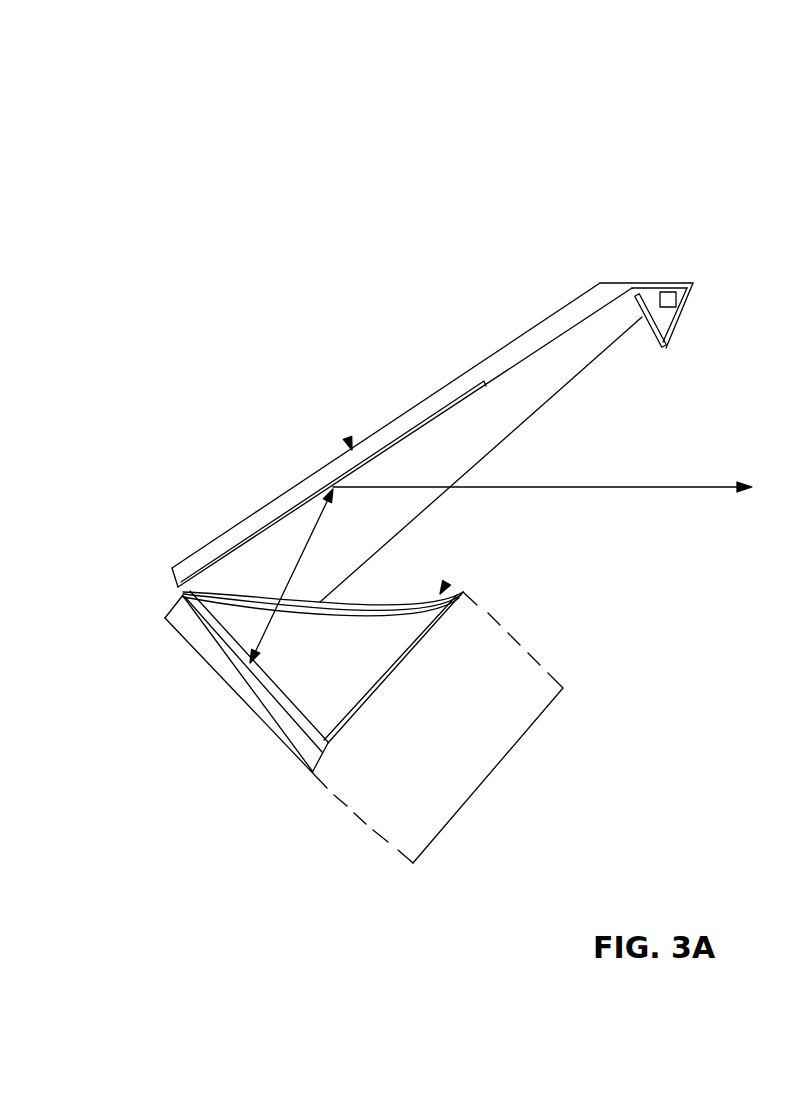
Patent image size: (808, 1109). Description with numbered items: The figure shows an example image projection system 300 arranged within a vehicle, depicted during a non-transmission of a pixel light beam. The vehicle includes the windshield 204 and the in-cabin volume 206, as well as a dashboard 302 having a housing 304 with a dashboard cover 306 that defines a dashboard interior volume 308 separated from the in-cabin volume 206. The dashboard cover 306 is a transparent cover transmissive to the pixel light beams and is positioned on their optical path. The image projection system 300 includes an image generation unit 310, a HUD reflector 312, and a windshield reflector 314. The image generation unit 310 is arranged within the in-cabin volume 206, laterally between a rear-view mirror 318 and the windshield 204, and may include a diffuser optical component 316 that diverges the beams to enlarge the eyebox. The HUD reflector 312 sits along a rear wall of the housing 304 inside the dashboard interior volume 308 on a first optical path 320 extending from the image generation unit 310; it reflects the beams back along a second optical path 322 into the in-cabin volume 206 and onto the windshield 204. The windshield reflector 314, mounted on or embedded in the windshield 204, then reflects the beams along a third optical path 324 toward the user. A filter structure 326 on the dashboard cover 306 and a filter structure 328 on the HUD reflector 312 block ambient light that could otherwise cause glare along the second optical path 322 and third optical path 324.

The image projection system 300 is at (157, 51).
The windshield 204 is at (445, 373).
The in-cabin volume 206 is at (690, 599).
The dashboard 302 is at (503, 767).
The housing 304 is at (410, 673).
The dashboard cover 306 is at (450, 617).
The dashboard interior volume 308 is at (343, 666).
The image generation unit 310 is at (676, 318).
The HUD reflector 312 is at (330, 750).
The windshield reflector 314 is at (348, 438).
The diffuser optical component 316 is at (641, 322).
The rear-view mirror 318 is at (676, 334).
The first optical path 320 is at (531, 420).
The second optical path 322 is at (303, 551).
The third optical path 324 is at (640, 492).
The filter structure 326 is at (447, 583).
The filter structure 328 is at (335, 743).